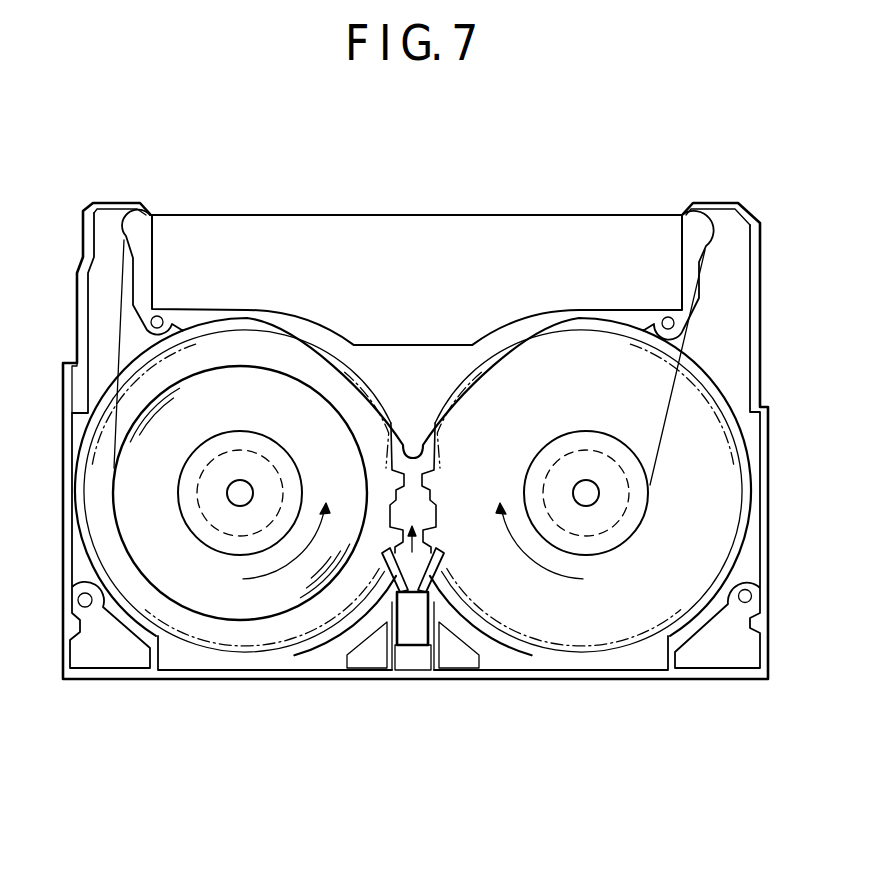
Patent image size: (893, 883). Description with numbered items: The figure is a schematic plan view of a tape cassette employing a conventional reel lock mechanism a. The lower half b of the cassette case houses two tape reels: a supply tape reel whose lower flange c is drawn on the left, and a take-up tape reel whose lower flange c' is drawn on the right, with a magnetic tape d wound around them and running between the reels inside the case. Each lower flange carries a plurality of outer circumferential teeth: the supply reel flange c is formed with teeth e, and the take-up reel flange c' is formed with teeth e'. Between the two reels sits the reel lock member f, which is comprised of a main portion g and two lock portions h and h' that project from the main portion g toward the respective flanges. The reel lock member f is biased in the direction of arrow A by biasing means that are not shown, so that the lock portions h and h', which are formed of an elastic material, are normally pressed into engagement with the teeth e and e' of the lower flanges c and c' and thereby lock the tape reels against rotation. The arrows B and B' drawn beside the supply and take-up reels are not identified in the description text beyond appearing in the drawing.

The reel lock mechanism a is at (312, 738).
The lower half of a cassette case b is at (113, 680).
The lower flange of a supply tape reel c is at (196, 493).
The lower flange of a take-up tape reel c' is at (664, 448).
The magnetic tape d is at (443, 214).
The outer circumferential teeth e is at (377, 573).
The outer circumferential teeth e' is at (450, 488).
The reel lock member f is at (417, 648).
The main portion g is at (407, 638).
The lock portion h is at (374, 573).
The lock portion h' is at (460, 570).
The arrow A is at (411, 554).
The supply reel rotation direction B is at (268, 548).
The take-up reel rotation direction B' is at (553, 552).